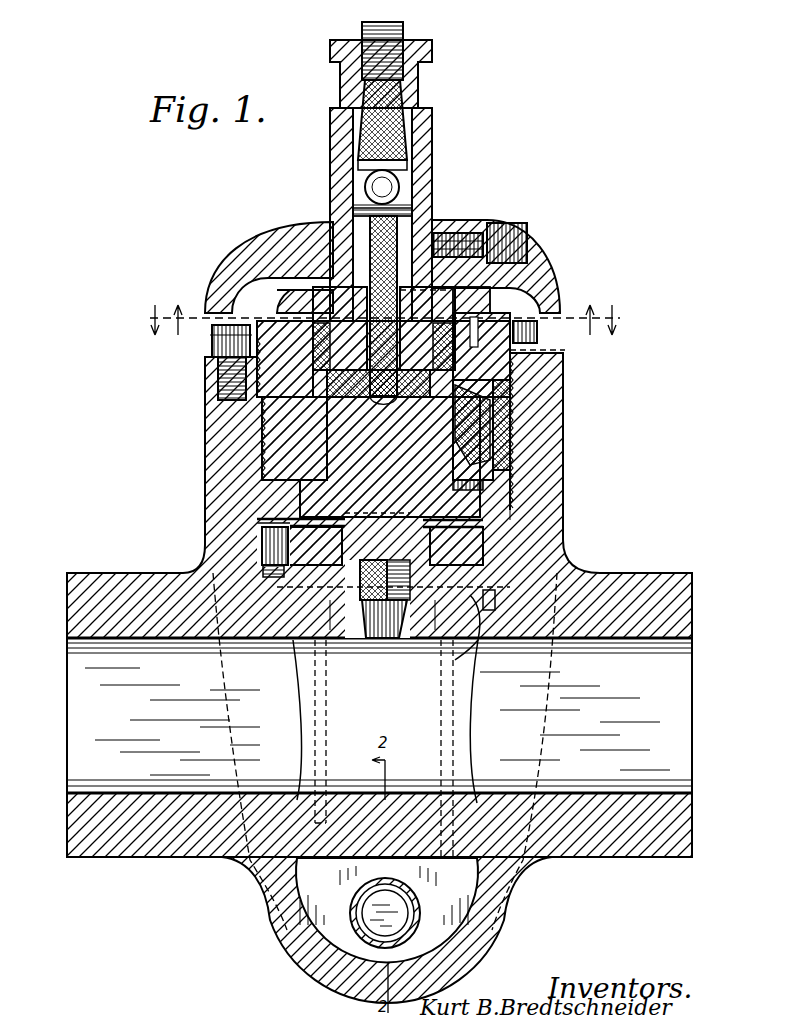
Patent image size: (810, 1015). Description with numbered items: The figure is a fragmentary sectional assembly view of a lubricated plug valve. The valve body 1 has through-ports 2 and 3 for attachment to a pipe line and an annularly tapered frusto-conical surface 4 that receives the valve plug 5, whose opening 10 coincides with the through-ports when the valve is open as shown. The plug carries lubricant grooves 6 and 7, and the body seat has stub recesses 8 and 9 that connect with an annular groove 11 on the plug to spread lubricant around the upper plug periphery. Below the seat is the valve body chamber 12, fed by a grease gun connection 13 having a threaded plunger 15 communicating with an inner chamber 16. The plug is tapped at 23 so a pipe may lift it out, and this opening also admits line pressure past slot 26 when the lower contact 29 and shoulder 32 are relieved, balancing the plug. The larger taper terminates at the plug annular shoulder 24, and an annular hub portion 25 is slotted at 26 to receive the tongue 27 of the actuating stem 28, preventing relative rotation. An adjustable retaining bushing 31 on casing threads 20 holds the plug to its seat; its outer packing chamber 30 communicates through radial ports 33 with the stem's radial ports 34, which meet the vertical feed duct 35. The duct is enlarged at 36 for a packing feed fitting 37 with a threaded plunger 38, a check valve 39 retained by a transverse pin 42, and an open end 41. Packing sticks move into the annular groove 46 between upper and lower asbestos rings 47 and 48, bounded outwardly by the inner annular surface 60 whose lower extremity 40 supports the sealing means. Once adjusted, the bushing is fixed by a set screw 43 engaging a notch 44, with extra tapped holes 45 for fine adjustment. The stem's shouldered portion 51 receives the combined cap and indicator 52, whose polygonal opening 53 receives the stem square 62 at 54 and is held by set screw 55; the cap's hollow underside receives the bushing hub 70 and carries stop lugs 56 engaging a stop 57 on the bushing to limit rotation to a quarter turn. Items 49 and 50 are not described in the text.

The valve body 1 is at (623, 562).
The through-port 2 is at (693, 693).
The through-port 3 is at (68, 720).
The frusto-conical surface 4 is at (478, 642).
The valve plug 5 is at (255, 652).
The lubricant groove 6 is at (318, 722).
The lubricant groove 7 is at (447, 731).
The stub recess 8 is at (336, 640).
The stub recess 9 is at (430, 640).
The plug opening 10 is at (300, 749).
The annular groove 11 is at (492, 596).
The valve body chamber 12 is at (312, 907).
The grease gun connection 13 is at (422, 898).
The threaded plunger 15 is at (382, 902).
The inner chamber 16 is at (352, 977).
The casing threads 20 is at (524, 431).
The tapped opening 23 is at (378, 640).
The plug annular shoulder 24 is at (262, 545).
The annular hub portion 25 is at (260, 526).
The slot 26 is at (416, 524).
The tongue 27 is at (336, 519).
The actuating stem 28 is at (448, 447).
The lower contact 29 is at (456, 546).
The packing chamber 30 is at (520, 422).
The adjustable retaining bushing 31 is at (518, 448).
The plug shoulder 32 is at (314, 546).
The radial port 33 is at (512, 398).
The radial port 34 is at (333, 346).
The feed duct 35 is at (427, 328).
The enlarged upper portion 36 is at (366, 186).
The packing feed fitting 37 is at (424, 97).
The threaded plunger 38 is at (405, 30).
The check valve 39 is at (400, 192).
The lower extremity 40 is at (334, 437).
The open end portion 41 is at (416, 213).
The transverse pin 42 is at (362, 201).
The set screw 43 is at (222, 347).
The notch 44 is at (215, 338).
The tapped hole 45 is at (232, 378).
The annular groove 46 is at (456, 437).
The upper packing ring 47 is at (340, 328).
The lower packing ring 48 is at (452, 422).
The chamber 49 is at (495, 280).
The thread 50 is at (500, 480).
The shouldered portion 51 is at (320, 224).
The combined cap and indicator 52 is at (244, 238).
The polygonal opening 53 is at (353, 214).
The square engagement location 54 is at (440, 230).
The set screw 55 is at (500, 232).
The stop lug 56 is at (563, 350).
The stop 57 is at (520, 310).
The inner annular surface 60 is at (460, 360).
The stem square 62 is at (432, 165).
The bushing hub 70 is at (295, 286).